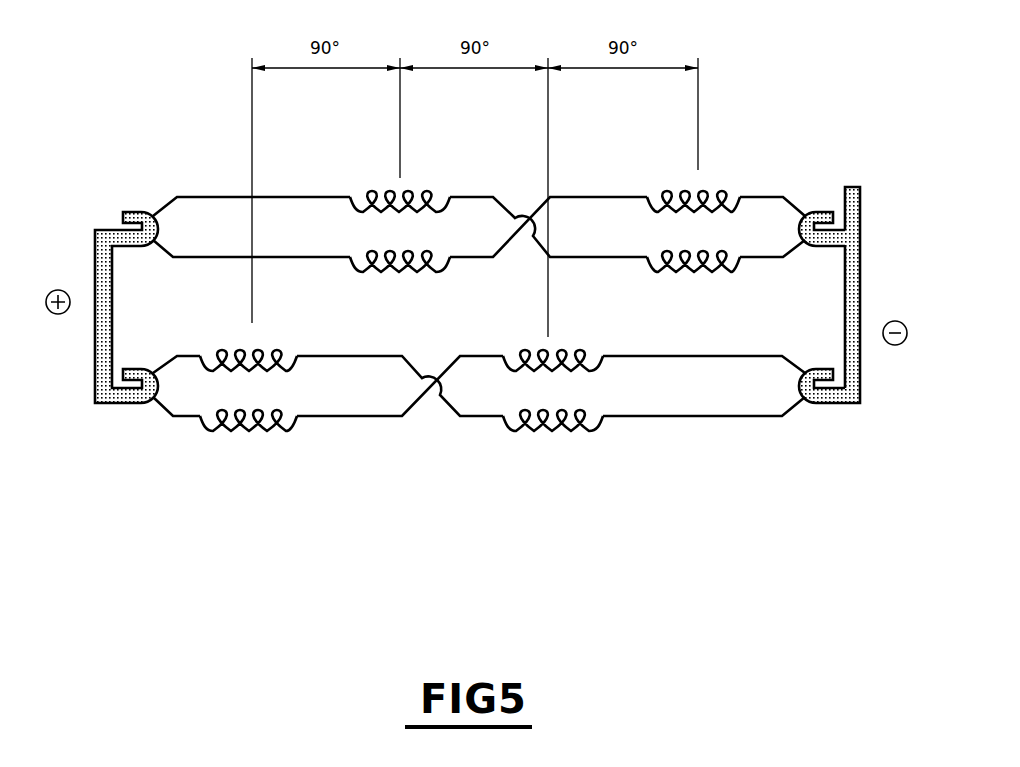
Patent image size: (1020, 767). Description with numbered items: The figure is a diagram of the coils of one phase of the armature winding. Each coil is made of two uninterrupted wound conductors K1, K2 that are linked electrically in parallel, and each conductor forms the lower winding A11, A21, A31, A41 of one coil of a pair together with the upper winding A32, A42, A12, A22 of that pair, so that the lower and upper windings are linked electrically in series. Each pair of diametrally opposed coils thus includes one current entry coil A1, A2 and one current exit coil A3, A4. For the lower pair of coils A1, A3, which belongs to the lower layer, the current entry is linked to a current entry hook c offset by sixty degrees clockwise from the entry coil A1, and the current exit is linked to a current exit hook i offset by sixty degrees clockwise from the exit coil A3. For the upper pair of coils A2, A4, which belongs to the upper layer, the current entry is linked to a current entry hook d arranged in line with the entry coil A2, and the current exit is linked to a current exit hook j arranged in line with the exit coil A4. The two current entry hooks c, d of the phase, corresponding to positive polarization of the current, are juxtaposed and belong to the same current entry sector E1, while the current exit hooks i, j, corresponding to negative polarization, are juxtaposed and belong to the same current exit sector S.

The current entry sector E1 is at (94, 318).
The current exit sector S is at (849, 313).
The current entry hook d is at (112, 231).
The current entry hook c is at (122, 406).
The current exit hook j is at (842, 228).
The current exit hook i is at (840, 404).
The current entry coil A1 is at (291, 408).
The lower winding A11 is at (275, 408).
The upper winding A12 is at (255, 352).
The current entry coil A2 is at (419, 228).
The lower winding A21 is at (408, 260).
The upper winding A22 is at (410, 190).
The current exit coil A3 is at (576, 414).
The lower winding A31 is at (563, 410).
The upper winding A32 is at (560, 350).
The current exit coil A4 is at (717, 229).
The lower winding A41 is at (703, 262).
The upper winding A42 is at (703, 190).
The wound conductor K1 is at (484, 356).
The wound conductor K2 is at (483, 418).